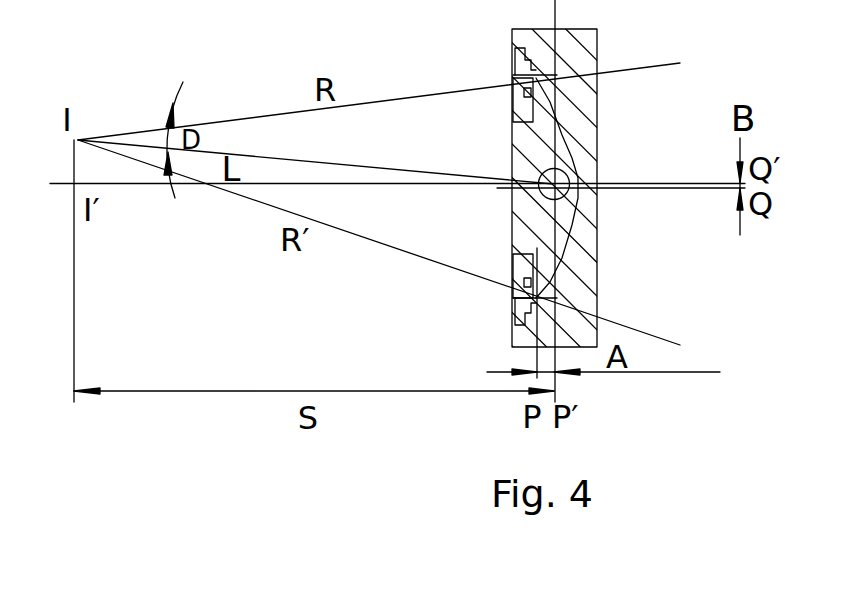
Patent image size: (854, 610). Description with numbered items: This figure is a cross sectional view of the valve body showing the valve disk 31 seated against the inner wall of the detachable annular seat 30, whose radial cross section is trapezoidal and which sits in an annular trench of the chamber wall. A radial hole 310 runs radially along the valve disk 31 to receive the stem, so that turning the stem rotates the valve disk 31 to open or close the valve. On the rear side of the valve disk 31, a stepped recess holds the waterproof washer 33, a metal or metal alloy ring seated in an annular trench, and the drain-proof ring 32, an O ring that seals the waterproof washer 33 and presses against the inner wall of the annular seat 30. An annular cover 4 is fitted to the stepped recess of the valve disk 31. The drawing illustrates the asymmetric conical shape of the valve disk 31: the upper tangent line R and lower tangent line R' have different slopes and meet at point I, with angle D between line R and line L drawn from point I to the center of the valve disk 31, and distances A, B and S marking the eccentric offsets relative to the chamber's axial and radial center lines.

The annular seat 30 is at (514, 79).
The waterproof washer 33 is at (520, 77).
The drain-proof ring 32 is at (523, 88).
The annular cover 4 is at (523, 95).
The valve disk 31 is at (565, 155).
The radial hole 310 is at (568, 192).